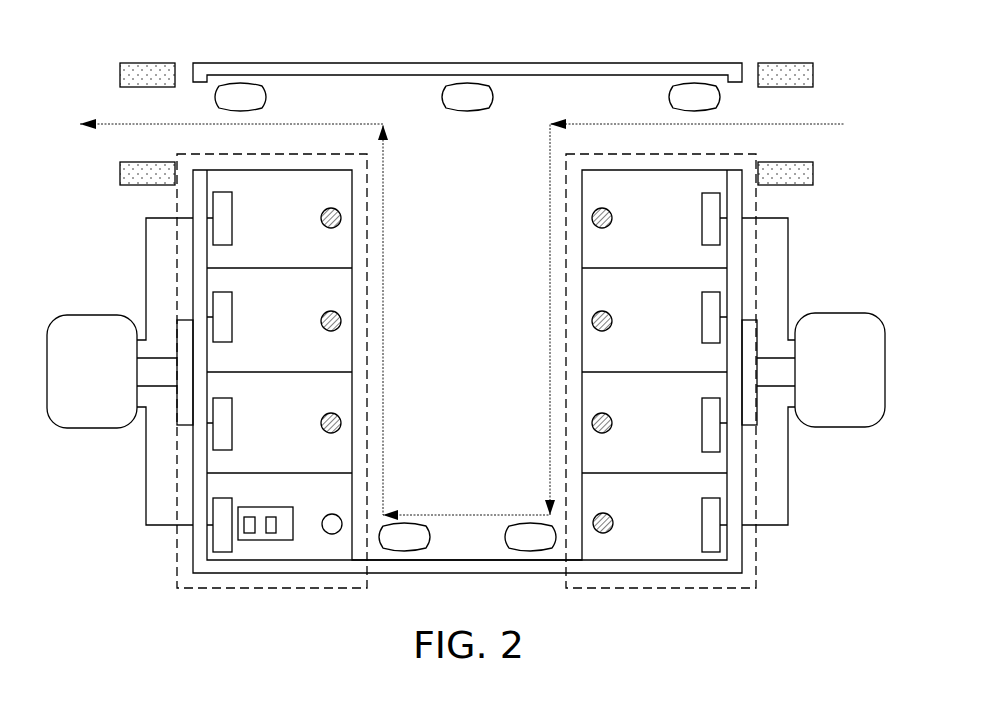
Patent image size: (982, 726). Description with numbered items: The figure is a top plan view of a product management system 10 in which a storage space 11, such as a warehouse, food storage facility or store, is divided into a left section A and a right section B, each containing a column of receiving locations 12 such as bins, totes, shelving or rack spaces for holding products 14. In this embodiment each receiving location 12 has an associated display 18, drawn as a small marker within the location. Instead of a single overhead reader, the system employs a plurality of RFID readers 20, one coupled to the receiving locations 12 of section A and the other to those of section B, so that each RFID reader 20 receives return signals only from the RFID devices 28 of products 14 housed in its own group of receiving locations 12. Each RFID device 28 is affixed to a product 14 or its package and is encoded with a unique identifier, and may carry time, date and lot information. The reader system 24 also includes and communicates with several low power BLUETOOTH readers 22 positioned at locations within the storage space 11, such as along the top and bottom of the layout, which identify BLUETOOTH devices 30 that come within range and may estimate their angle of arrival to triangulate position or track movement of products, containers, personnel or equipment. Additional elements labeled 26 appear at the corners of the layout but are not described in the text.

The product management system 10 is at (90, 242).
The storage space 11 is at (643, 574).
The receiving locations 12 is at (345, 195).
The product 14 is at (287, 533).
The display 18 is at (321, 217).
The RFID reader 20 is at (100, 420).
The BLUETOOTH reader 22 is at (258, 94).
The reader system 24 is at (468, 93).
The reflector 26 is at (148, 63).
The RFID device 28 is at (248, 540).
The BLUETOOTH device 30 is at (271, 540).
The section A is at (173, 577).
The section B is at (760, 576).